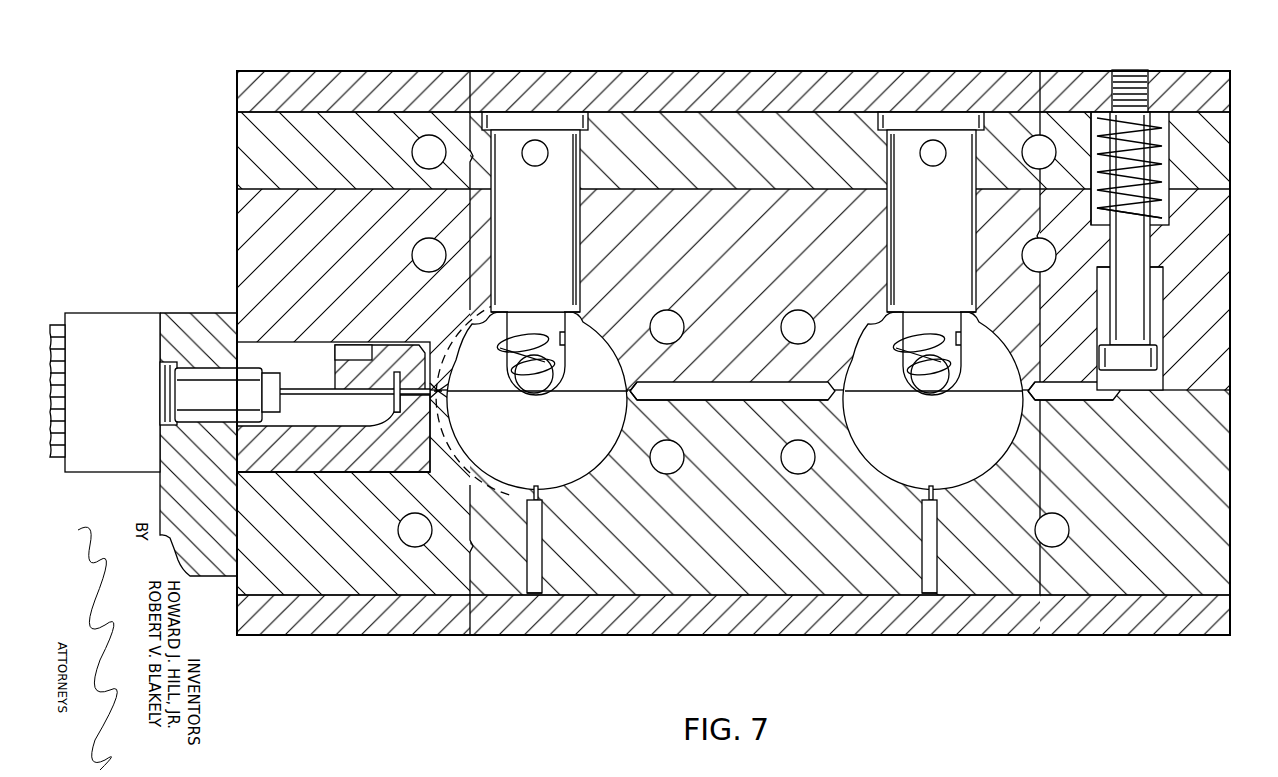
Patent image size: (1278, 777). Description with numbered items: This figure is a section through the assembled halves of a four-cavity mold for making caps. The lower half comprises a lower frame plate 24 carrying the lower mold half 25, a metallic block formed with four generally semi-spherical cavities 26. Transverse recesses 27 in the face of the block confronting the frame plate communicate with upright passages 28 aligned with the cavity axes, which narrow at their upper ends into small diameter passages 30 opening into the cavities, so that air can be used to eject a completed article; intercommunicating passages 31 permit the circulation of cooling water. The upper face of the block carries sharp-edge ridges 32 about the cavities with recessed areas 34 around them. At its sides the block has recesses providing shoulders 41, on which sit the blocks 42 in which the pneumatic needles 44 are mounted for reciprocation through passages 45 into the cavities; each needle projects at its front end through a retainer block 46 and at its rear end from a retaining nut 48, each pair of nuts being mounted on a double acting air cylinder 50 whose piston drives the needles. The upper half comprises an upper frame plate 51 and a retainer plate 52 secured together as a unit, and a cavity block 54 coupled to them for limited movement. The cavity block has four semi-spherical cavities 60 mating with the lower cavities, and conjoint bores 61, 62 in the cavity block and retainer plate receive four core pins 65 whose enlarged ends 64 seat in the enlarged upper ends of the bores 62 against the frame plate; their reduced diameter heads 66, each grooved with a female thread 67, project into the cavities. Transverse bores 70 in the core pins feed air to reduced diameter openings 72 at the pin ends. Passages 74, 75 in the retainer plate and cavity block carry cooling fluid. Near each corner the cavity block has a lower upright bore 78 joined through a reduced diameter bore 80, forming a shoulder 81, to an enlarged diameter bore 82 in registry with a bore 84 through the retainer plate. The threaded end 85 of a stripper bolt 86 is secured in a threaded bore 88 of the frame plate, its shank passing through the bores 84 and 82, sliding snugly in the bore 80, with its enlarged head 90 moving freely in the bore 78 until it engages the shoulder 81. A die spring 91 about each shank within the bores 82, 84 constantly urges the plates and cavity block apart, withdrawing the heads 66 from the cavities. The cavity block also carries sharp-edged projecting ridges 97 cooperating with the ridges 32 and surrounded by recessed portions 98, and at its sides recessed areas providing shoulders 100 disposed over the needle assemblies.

The lower frame plate 24 is at (1230, 606).
The lower mold half 25 is at (1228, 548).
The semi-spherical cavities 26 is at (575, 472).
The transverse recesses 27 is at (543, 585).
The upright passages 28 is at (544, 541).
The small diameter passages 30 is at (528, 488).
The intercommunicating passages 31 is at (781, 457).
The sharp-edge ridges 32 is at (626, 400).
The recessed areas 34 is at (756, 400).
The shoulders 41 is at (275, 472).
The blocks 42 is at (345, 455).
The pneumatic needles 44 is at (300, 388).
The passages 45 is at (446, 396).
The retainer block 46 is at (385, 365).
The retaining nut 48 is at (252, 372).
The double acting air cylinder 50 is at (118, 313).
The upper frame plate 51 is at (800, 80).
The retainer plate 52 is at (835, 115).
The cavity block 54 is at (1215, 258).
The semi-spherical cavities 60 is at (618, 344).
The bores 61 is at (578, 219).
The bores 62 is at (580, 170).
The enlarged ends 64 is at (543, 112).
The core pins 65 is at (518, 252).
The reduced diameter heads 66 is at (566, 326).
The female thread 67 is at (548, 392).
The transverse bores 70 is at (532, 163).
The reduced diameter openings 72 is at (515, 352).
The passages 74 is at (412, 152).
The passages 75 is at (417, 250).
The lower upright bore 78 is at (1163, 300).
The reduced diameter bore 80 is at (1150, 250).
The shoulder 81 is at (1160, 266).
The enlarged diameter bore 82 is at (1095, 214).
The bore 84 is at (1090, 180).
The threaded end 85 is at (1132, 72).
The stripper bolt 86 is at (1169, 128).
The threaded bore 88 is at (1148, 95).
The enlarged head 90 is at (1160, 362).
The die spring 91 is at (1163, 166).
The sharp-edged projecting ridges 97 is at (630, 385).
The recessed portions 98 is at (940, 385).
The shoulders 100 is at (320, 342).